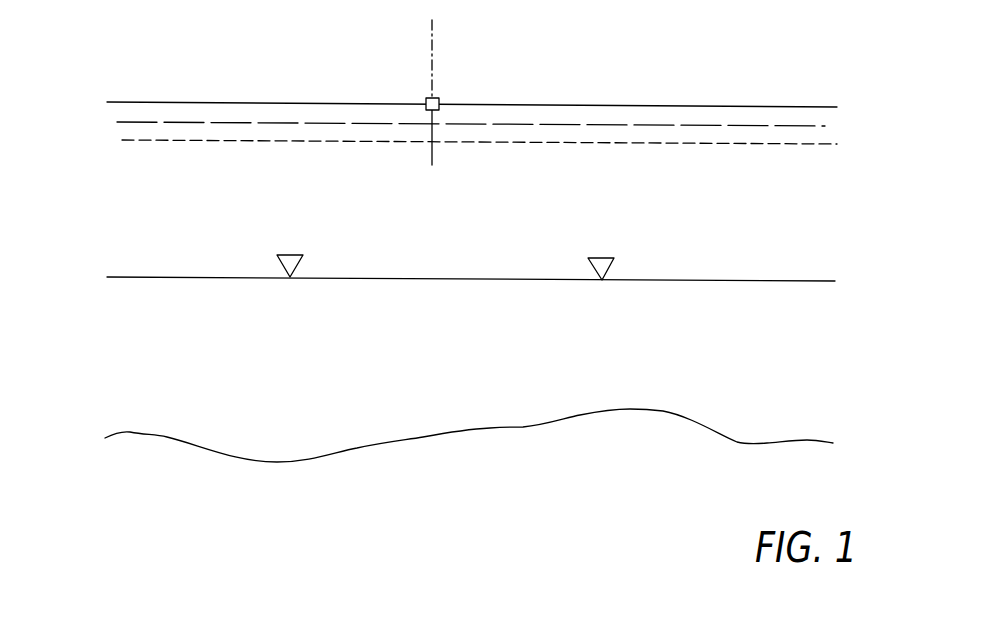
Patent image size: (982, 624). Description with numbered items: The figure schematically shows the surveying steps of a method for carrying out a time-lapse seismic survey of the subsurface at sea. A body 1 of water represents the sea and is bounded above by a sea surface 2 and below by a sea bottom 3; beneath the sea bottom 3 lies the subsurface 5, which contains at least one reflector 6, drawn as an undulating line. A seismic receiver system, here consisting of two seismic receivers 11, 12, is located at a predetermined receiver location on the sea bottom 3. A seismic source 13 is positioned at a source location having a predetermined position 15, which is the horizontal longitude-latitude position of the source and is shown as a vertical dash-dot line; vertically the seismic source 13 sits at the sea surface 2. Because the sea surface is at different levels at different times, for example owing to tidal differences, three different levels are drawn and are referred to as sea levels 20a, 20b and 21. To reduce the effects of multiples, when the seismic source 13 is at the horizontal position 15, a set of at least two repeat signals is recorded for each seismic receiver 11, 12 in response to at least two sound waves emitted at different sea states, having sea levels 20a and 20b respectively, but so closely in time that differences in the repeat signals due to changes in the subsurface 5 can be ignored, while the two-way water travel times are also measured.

The body of water 1 is at (414, 202).
The sea surface 2 is at (107, 102).
The sea bottom 3 is at (765, 281).
The subsurface 5 is at (428, 368).
The reflector 6 is at (742, 440).
The seismic receiver 11 is at (290, 255).
The seismic receiver 12 is at (602, 258).
The seismic source 13 is at (427, 99).
The predetermined position 15 is at (432, 40).
The sea level 20a is at (822, 106).
The sea level 20b is at (825, 144).
The sea level 21 is at (827, 126).